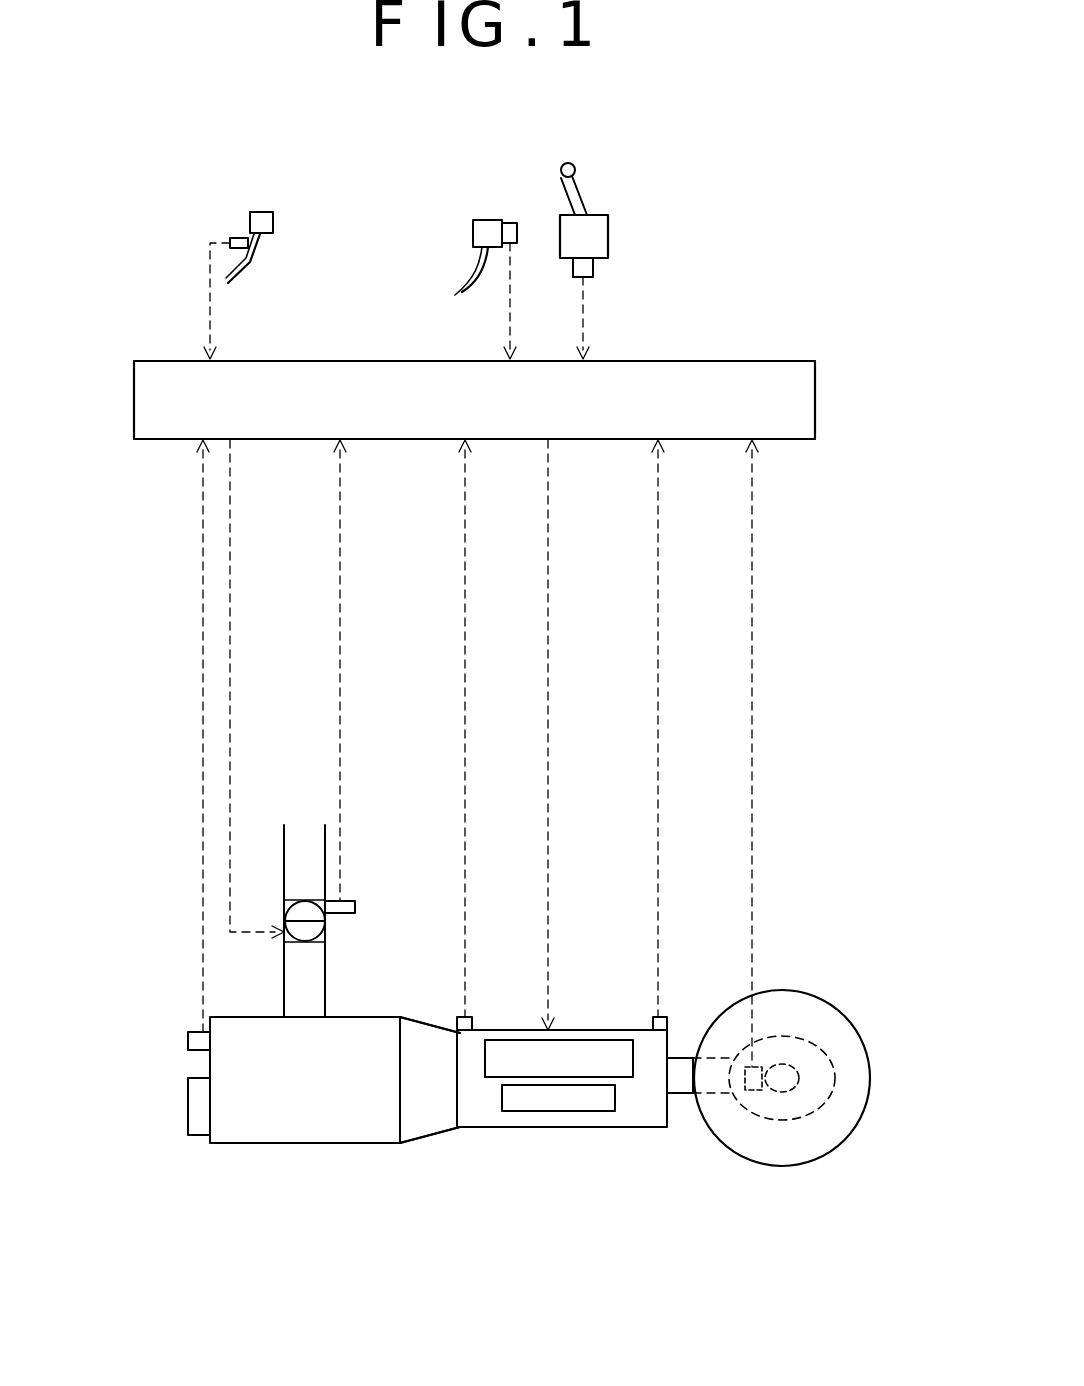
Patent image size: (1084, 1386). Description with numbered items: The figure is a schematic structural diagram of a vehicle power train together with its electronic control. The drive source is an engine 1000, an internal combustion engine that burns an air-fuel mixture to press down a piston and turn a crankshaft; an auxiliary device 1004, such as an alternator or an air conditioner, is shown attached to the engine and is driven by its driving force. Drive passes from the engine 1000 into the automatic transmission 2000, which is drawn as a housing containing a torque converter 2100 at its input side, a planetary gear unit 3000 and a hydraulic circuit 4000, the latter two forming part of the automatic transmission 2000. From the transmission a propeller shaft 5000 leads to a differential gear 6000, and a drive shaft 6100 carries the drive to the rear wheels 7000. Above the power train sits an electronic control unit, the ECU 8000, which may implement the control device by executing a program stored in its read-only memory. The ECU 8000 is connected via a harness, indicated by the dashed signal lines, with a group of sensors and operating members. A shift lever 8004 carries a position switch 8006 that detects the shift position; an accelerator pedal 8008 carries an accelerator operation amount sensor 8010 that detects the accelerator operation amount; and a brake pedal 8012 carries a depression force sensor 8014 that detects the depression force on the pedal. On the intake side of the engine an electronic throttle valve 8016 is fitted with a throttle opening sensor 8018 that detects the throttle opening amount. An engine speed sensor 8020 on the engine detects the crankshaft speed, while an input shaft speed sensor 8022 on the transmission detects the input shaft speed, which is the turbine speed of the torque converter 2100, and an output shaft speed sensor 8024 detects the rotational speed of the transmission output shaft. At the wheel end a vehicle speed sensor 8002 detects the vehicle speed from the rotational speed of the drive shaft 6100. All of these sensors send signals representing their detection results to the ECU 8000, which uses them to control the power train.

The engine 1000 is at (306, 1144).
The auxiliary device 1004 is at (186, 1108).
The automatic transmission 2000 is at (500, 1128).
The torque converter 2100 is at (430, 1136).
The planetary gear unit 3000 is at (590, 1040).
The hydraulic circuit 4000 is at (533, 1112).
The propeller shaft 5000 is at (683, 1094).
The differential gear 6000 is at (797, 1037).
The drive shaft 6100 is at (795, 1090).
The rear wheels 7000 is at (785, 1167).
The electronic control unit (ECU) 8000 is at (192, 360).
The vehicle speed sensor 8002 is at (745, 1073).
The shift lever 8004 is at (588, 200).
The position switch 8006 is at (596, 263).
The accelerator pedal 8008 is at (258, 258).
The accelerator operation amount sensor 8010 is at (236, 238).
The brake pedal 8012 is at (478, 255).
The depression force sensor 8014 is at (505, 223).
The electronic throttle valve 8016 is at (285, 910).
The throttle opening sensor 8018 is at (350, 915).
The engine speed sensor 8020 is at (186, 1042).
The input shaft speed sensor 8022 is at (473, 1020).
The output shaft speed sensor 8024 is at (655, 1018).